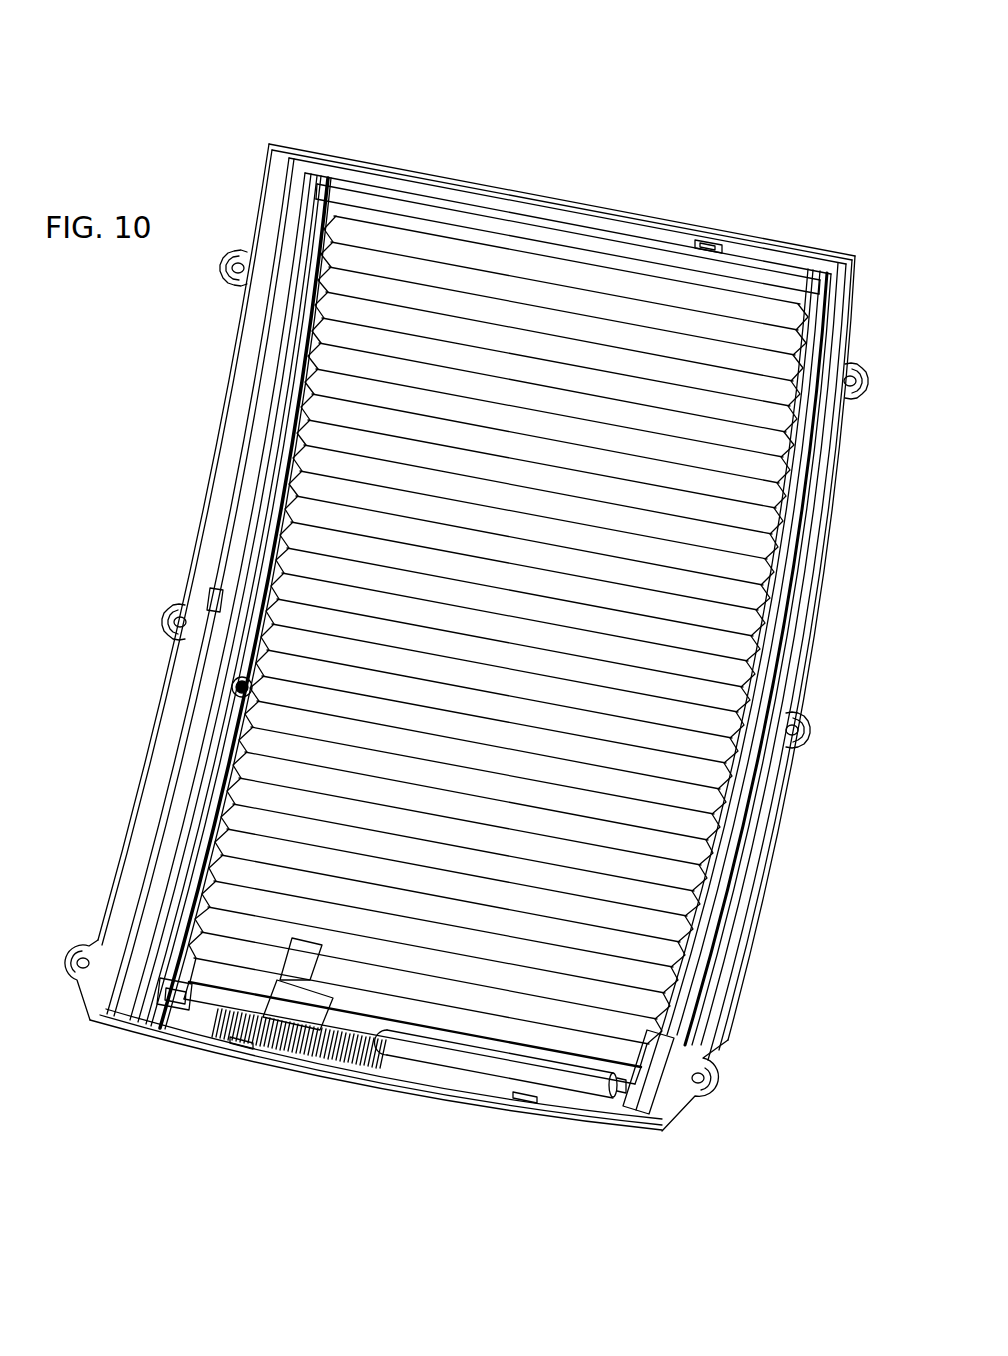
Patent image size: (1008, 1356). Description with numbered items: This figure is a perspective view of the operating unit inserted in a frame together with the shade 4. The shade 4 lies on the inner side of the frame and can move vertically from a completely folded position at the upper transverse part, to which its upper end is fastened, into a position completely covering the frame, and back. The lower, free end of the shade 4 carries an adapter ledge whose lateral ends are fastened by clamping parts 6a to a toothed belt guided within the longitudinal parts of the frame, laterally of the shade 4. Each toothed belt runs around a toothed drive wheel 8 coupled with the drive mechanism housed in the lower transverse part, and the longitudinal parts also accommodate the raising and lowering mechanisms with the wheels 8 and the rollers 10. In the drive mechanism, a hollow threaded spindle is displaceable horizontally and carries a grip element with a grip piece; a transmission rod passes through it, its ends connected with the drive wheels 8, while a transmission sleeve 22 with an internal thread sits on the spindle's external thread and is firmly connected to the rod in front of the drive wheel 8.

The shade 4 is at (611, 268).
The clamping parts 6a is at (650, 1052).
The toothed drive wheel 8 is at (150, 977).
The roller 10 is at (243, 687).
The transmission sleeve 22 is at (427, 1055).